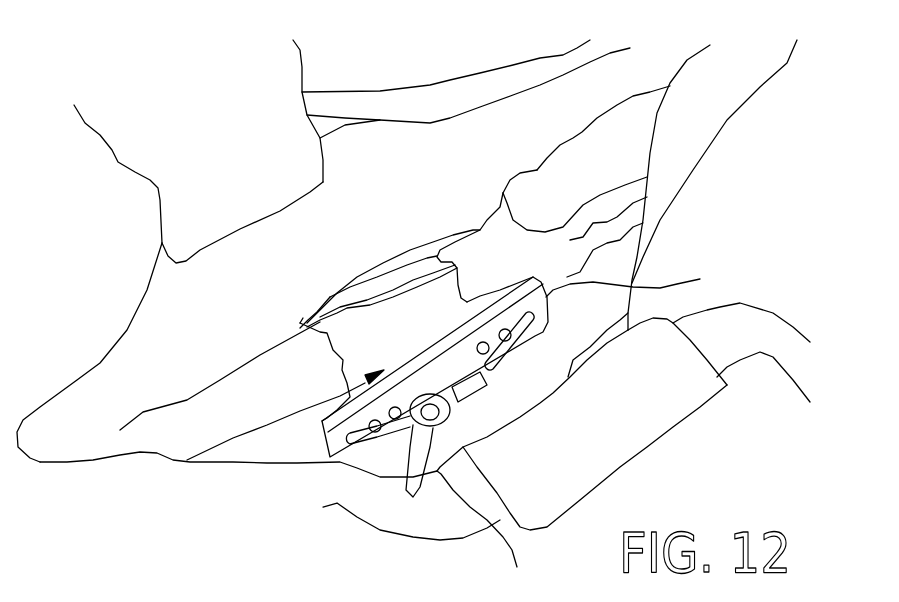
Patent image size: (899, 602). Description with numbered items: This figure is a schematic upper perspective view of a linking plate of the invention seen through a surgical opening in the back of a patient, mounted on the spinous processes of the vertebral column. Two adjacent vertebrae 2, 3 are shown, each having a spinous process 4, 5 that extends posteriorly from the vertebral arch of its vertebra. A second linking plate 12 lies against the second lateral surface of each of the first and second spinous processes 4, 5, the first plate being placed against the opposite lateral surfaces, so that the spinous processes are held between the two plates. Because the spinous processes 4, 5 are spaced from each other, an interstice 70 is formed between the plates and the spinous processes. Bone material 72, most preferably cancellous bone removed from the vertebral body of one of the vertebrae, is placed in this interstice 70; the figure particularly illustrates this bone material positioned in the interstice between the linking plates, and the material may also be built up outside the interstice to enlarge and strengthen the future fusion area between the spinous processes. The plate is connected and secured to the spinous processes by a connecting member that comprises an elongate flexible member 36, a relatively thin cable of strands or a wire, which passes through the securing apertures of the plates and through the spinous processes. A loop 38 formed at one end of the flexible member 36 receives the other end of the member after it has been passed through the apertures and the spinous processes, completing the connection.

The vertebra 2 is at (220, 376).
The vertebra 3 is at (603, 125).
The spinous process 4 is at (284, 343).
The spinous process 5 is at (575, 172).
The second linking plate 12 is at (644, 247).
The elongate flexible member 36 is at (403, 260).
The loop 38 is at (518, 389).
The interstice 70 is at (285, 453).
The bone material 72 is at (378, 253).